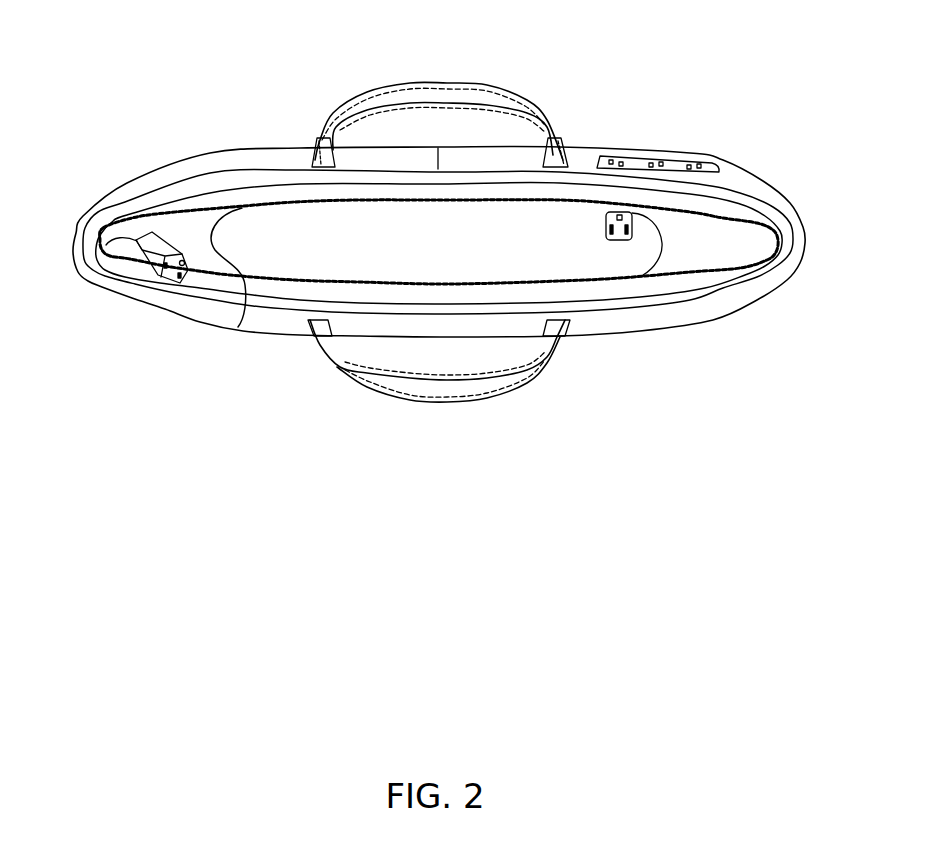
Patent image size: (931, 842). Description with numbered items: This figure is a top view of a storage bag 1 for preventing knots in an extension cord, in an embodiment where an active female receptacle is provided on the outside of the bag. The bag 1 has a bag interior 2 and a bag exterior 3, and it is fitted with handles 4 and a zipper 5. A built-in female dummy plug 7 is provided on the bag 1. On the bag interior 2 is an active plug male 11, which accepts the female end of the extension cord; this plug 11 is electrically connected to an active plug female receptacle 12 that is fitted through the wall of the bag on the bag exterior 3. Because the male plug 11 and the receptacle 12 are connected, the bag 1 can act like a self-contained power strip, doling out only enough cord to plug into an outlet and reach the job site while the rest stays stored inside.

The bag 1 is at (643, 313).
The bag interior 2 is at (323, 242).
The bag exterior 3 is at (205, 170).
The handles 4 is at (492, 95).
The zipper 5 is at (238, 327).
The female dummy plug 7 is at (101, 258).
The active plug male 11 is at (632, 230).
The active plug female receptacle 12 is at (657, 153).